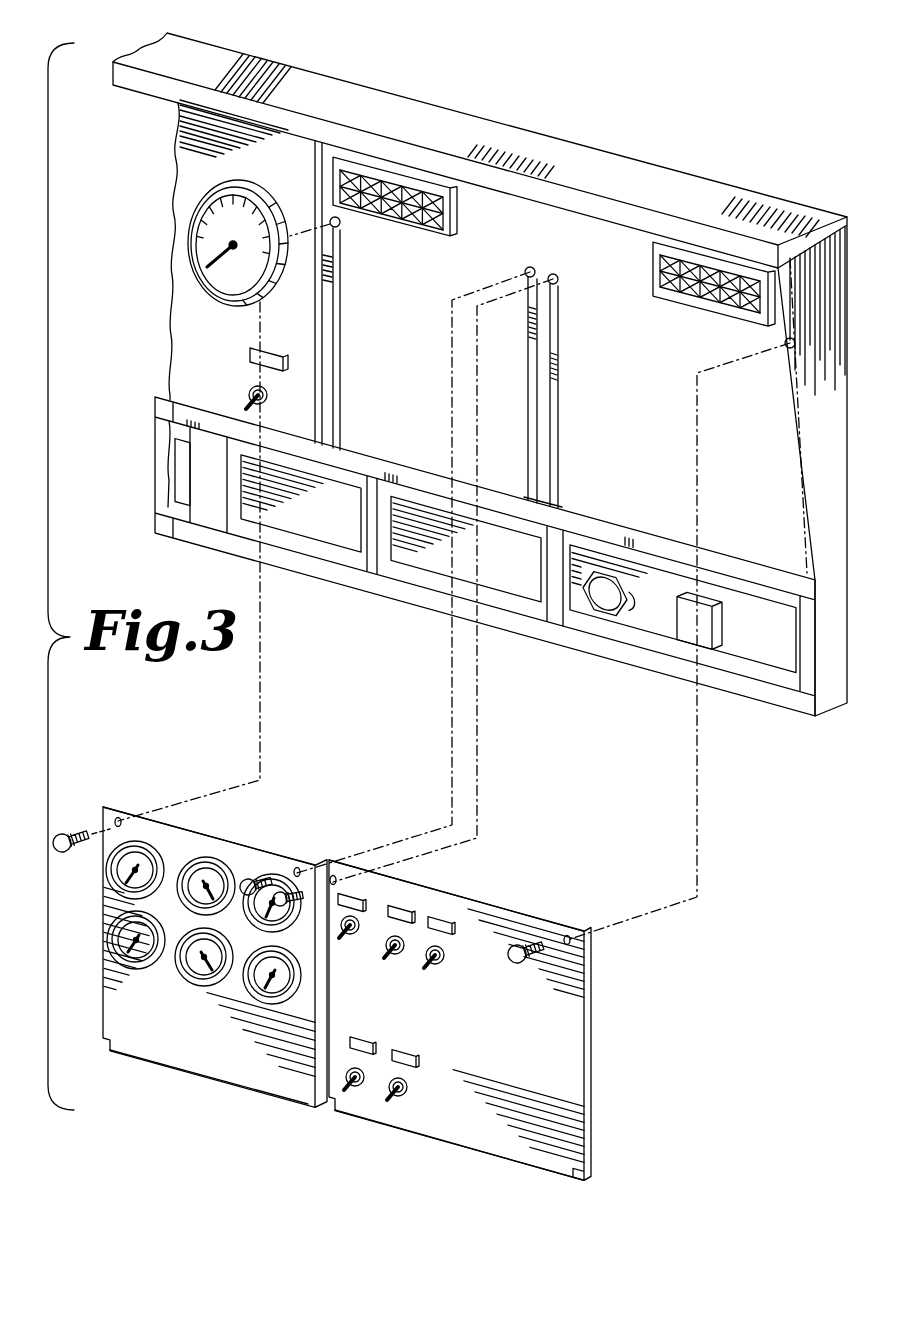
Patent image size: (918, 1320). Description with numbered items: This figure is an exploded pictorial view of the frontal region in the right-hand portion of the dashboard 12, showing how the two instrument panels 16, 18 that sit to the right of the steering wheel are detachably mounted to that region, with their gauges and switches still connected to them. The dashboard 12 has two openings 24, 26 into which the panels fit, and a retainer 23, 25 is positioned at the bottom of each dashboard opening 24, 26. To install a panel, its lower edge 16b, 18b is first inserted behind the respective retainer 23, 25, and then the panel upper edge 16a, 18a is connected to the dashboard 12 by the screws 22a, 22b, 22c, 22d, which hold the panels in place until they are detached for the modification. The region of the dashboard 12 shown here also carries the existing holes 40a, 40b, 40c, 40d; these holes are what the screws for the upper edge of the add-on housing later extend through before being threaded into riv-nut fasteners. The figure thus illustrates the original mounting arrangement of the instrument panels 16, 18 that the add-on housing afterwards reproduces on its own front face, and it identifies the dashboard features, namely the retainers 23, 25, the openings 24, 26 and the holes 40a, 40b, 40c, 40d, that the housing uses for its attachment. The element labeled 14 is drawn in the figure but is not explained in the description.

The dashboard 12 is at (548, 158).
The dash panel face 14 is at (287, 148).
The instrument panel 16 is at (253, 1068).
The panel upper edge 16a is at (210, 833).
The panel lower edge 16b is at (167, 1075).
The instrument panel 18 is at (583, 1084).
The panel upper edge 18a is at (517, 930).
The panel lower edge 18b is at (445, 1143).
The screw 22a is at (65, 829).
The screw 22b is at (322, 903).
The screw 22c is at (307, 908).
The screw 22d is at (533, 950).
The retainer 23 is at (380, 458).
The dashboard opening 24 is at (345, 326).
The retainer 25 is at (618, 524).
The dashboard opening 26 is at (633, 313).
The existing hole 40a is at (333, 222).
The existing hole 40b is at (530, 272).
The existing hole 40c is at (555, 278).
The existing hole 40d is at (792, 342).